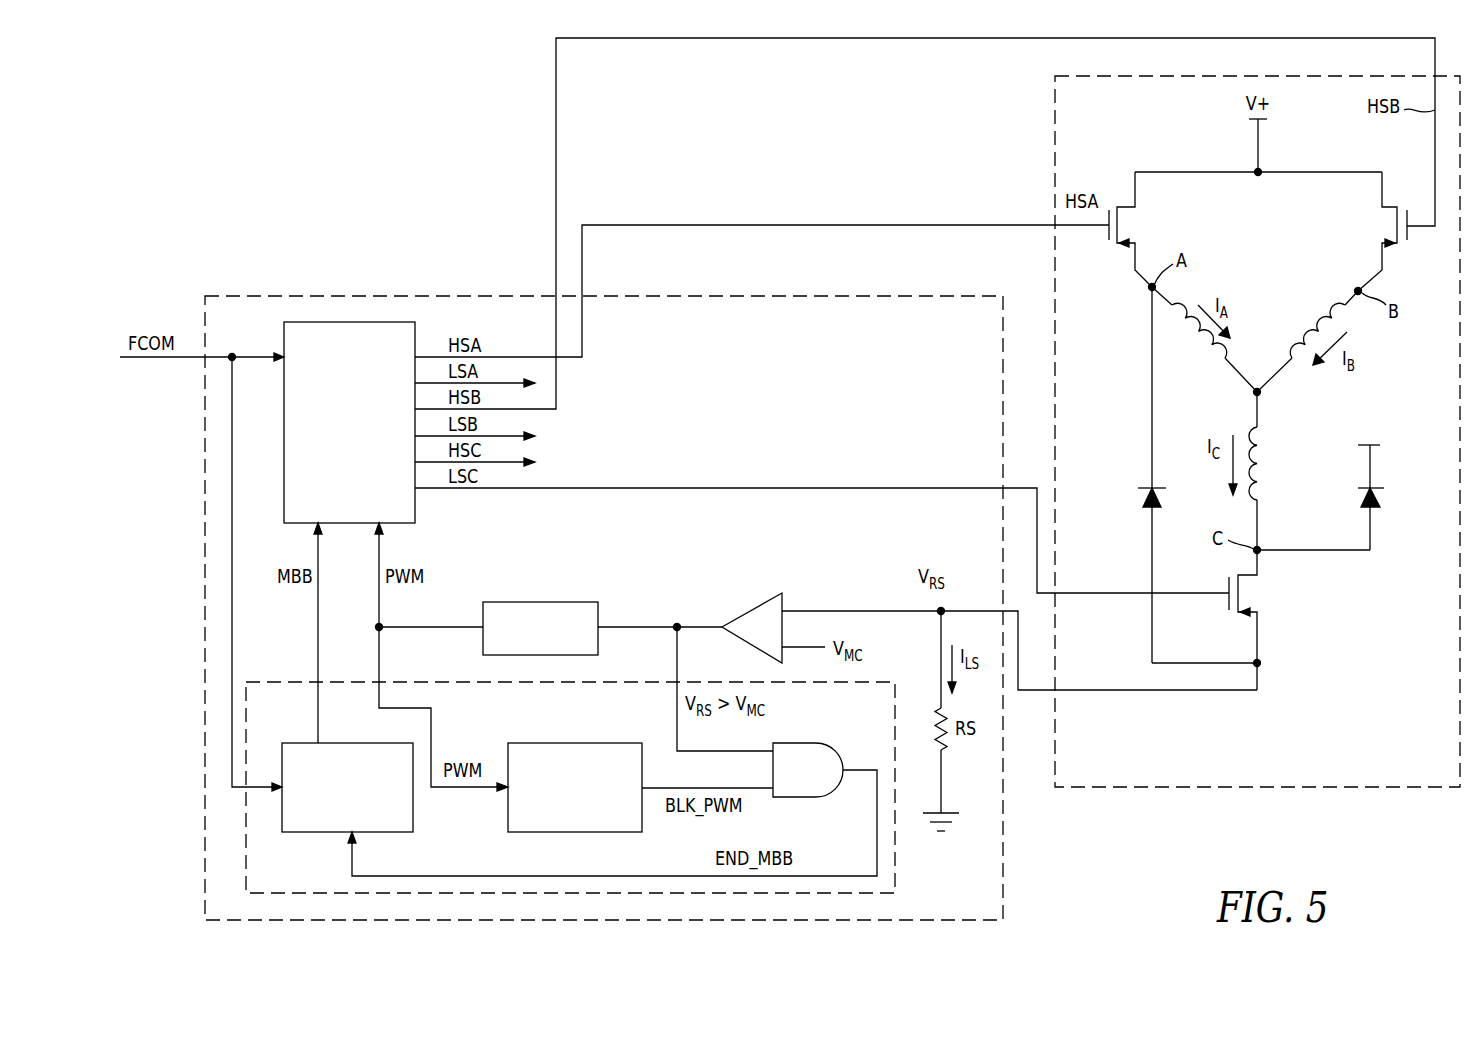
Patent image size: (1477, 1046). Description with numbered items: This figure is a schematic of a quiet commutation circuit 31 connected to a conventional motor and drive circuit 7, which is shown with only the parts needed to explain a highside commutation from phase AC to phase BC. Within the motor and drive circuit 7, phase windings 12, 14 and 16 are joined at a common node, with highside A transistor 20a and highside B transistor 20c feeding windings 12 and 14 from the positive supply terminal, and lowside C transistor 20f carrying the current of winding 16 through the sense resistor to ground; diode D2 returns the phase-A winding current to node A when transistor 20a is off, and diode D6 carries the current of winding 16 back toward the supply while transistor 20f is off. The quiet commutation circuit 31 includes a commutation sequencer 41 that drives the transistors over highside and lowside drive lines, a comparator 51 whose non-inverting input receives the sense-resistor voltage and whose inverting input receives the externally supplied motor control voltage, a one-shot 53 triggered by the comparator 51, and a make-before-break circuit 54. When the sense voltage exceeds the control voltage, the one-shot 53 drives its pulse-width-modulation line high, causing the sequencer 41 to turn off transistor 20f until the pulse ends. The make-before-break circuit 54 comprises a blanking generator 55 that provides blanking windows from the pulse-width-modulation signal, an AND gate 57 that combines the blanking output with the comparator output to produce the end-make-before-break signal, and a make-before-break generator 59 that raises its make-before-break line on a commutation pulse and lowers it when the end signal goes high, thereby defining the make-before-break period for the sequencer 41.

The motor and drive circuit 7 is at (1388, 765).
The phase winding 12 is at (1200, 337).
The phase winding 14 is at (1307, 347).
The phase winding 16 is at (1263, 436).
The highside A transistor 20a is at (1118, 224).
The highside B transistor 20c is at (1396, 226).
The lowside C transistor 20f is at (1241, 594).
The quiet commutation circuit 31 is at (886, 391).
The commutation sequencer 41 is at (365, 485).
The comparator 51 is at (750, 607).
The one-shot 53 is at (570, 602).
The make-before-break circuit 54 is at (277, 682).
The blanking generator 55 is at (605, 821).
The AND gate 57 is at (820, 797).
The make-before-break generator 59 is at (373, 821).
The diode D2 is at (1138, 496).
The diode D6 is at (1383, 498).